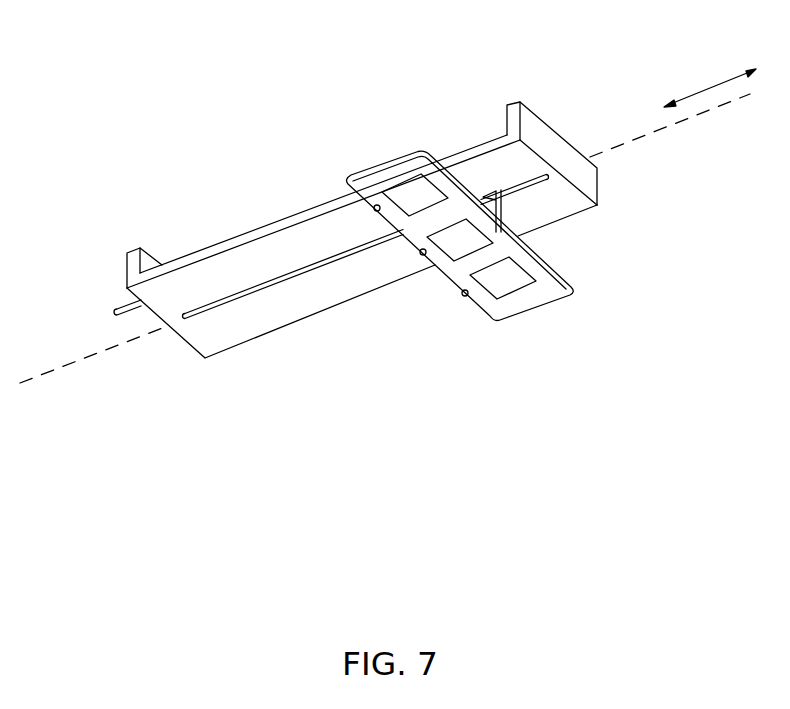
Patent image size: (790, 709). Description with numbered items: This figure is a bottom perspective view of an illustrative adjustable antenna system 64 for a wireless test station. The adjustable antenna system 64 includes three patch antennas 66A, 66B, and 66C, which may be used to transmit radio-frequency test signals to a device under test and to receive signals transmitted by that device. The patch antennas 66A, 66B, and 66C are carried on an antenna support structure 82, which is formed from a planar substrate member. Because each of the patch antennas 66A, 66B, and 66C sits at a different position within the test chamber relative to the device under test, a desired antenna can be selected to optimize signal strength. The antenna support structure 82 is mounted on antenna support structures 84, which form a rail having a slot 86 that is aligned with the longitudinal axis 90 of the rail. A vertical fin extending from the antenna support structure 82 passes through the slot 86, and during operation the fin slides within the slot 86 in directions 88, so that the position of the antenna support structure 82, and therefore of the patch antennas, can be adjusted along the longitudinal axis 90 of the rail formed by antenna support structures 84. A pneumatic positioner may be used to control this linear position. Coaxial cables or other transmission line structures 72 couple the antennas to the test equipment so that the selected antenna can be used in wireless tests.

The adjustable antenna system 64 is at (587, 36).
The transmission line structures 72 is at (125, 306).
The antenna support structure 82 is at (378, 163).
The antenna support structures 84 is at (598, 181).
The slot 86 is at (265, 294).
The directions 88 is at (710, 84).
The longitudinal axis 90 is at (78, 361).
The patch antenna 66A is at (428, 178).
The patch antenna 66B is at (348, 176).
The patch antenna 66C is at (520, 294).